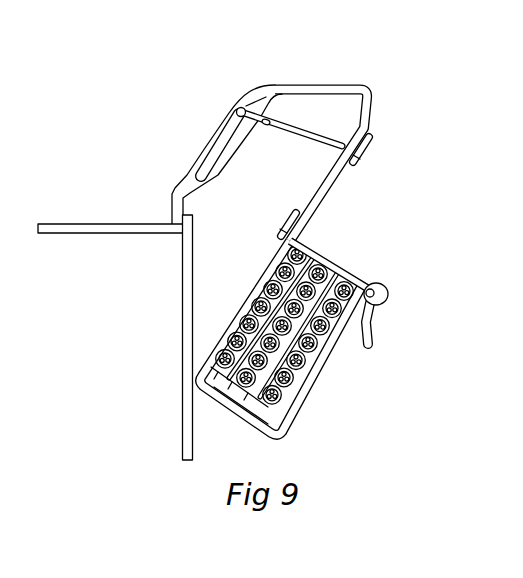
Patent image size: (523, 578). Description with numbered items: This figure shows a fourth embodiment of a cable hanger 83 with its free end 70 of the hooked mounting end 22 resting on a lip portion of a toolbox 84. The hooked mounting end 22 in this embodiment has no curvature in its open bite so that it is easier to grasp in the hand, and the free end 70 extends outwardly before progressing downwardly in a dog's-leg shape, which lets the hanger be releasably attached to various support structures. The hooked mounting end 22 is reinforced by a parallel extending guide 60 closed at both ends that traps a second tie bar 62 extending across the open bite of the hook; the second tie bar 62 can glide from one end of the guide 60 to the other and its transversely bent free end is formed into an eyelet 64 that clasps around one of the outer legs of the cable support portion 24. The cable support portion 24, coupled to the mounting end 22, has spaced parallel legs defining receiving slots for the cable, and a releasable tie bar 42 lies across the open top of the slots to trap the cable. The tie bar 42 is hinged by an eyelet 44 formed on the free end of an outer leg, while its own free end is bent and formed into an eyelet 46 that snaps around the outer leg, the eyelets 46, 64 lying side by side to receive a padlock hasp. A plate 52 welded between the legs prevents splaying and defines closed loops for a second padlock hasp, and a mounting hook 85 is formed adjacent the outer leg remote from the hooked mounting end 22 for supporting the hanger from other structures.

The hooked mounting end 22 is at (241, 144).
The cable support portion 24 is at (243, 294).
The tie bar 42 is at (328, 253).
The eyelet 44 is at (392, 288).
The eyelet 46 is at (287, 217).
The plate 52 is at (284, 422).
The guide 60 is at (221, 133).
The second tie bar 62 is at (294, 128).
The eyelet 64 is at (368, 155).
The free end 70 is at (172, 200).
The cable hanger 83 is at (317, 84).
The toolbox 84 is at (118, 353).
The mounting hook 85 is at (378, 322).